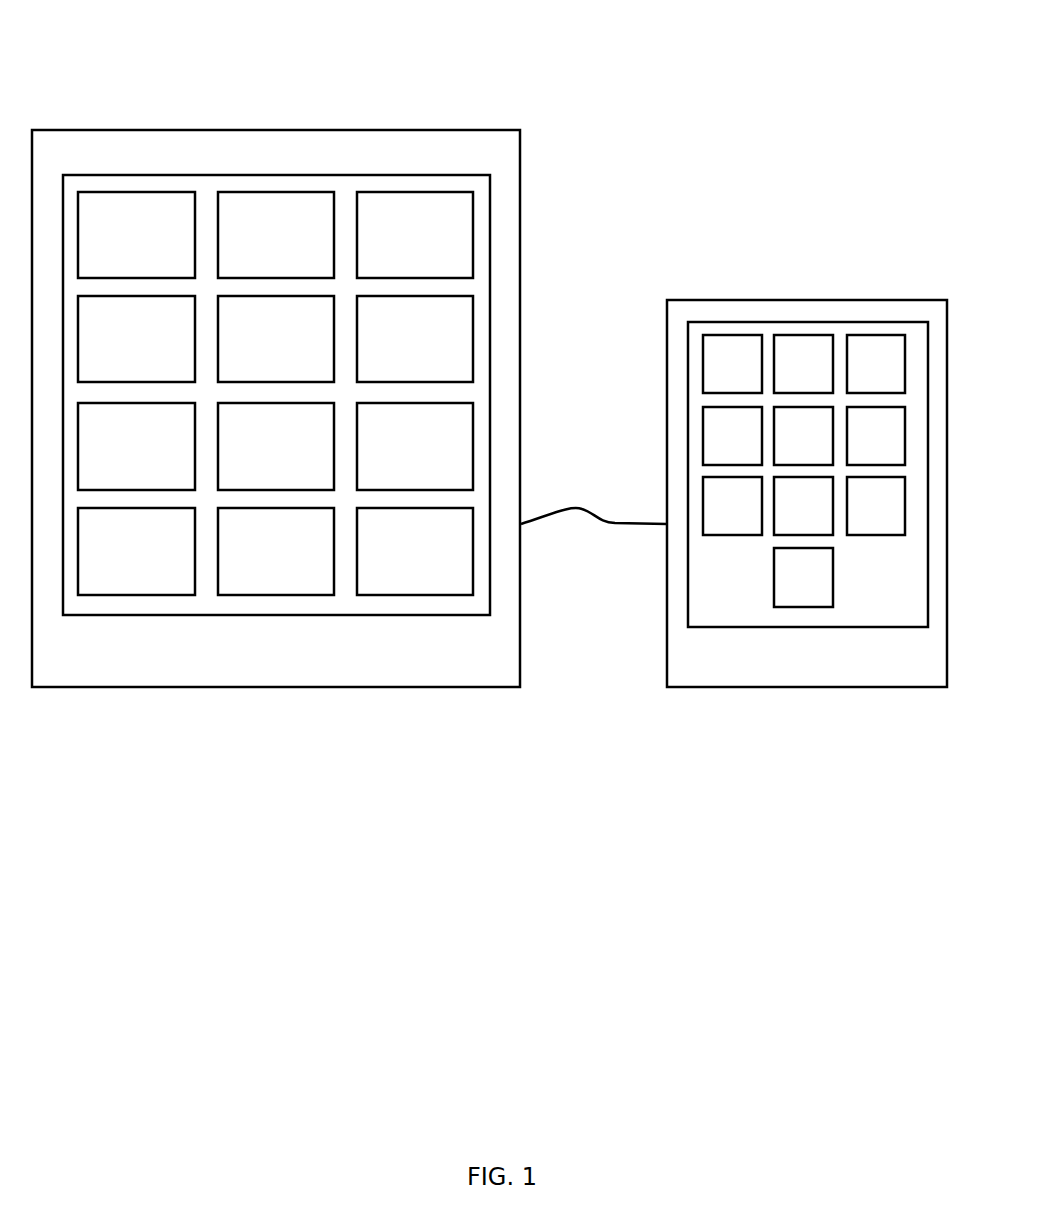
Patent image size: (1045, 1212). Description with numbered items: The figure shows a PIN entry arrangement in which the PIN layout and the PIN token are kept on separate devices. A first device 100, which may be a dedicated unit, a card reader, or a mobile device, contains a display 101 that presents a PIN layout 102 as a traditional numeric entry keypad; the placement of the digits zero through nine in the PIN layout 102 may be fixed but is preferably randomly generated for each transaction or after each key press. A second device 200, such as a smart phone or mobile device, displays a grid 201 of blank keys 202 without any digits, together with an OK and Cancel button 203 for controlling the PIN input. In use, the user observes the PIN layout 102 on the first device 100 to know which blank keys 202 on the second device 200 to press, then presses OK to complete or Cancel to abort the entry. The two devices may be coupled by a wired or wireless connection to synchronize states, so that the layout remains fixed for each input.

The first device 100 is at (710, 688).
The display 101 is at (910, 322).
The PIN layout 102 is at (730, 335).
The second device 200 is at (133, 687).
The grid 201 is at (135, 175).
The blank keys 202 is at (147, 190).
The OK and Cancel button 203 is at (172, 595).